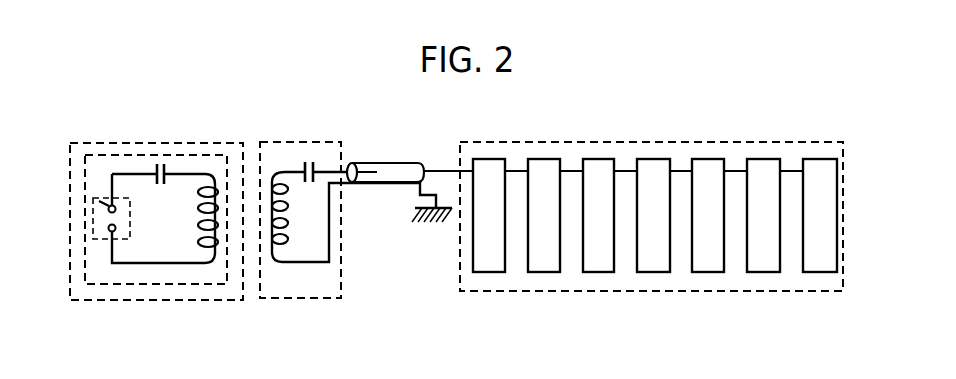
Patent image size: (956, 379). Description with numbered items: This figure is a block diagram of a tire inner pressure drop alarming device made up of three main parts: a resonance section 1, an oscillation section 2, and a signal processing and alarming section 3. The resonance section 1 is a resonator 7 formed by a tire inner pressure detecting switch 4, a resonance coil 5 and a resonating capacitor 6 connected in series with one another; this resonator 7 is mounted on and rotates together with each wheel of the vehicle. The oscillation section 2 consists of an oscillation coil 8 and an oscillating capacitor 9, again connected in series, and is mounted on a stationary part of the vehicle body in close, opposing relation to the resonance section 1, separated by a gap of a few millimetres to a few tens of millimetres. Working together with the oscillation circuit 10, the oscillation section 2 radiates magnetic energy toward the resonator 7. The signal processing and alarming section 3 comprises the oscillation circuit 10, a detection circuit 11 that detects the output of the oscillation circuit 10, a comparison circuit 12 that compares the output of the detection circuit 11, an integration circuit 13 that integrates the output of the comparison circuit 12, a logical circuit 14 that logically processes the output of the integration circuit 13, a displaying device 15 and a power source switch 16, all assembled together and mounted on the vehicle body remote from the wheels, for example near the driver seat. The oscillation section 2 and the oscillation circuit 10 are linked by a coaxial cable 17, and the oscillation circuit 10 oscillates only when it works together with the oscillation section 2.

The resonance section 1 is at (168, 143).
The oscillation section 2 is at (299, 142).
The signal processing and alarming section 3 is at (672, 292).
The tire inner pressure detecting switch 4 is at (130, 239).
The resonance coil 5 is at (198, 229).
The resonating capacitor 6 is at (165, 185).
The resonator 7 is at (148, 285).
The oscillation coil 8 is at (288, 239).
The oscillating capacitor 9 is at (315, 182).
The oscillation circuit 10 is at (485, 159).
The detection circuit 11 is at (540, 159).
The comparison circuit 12 is at (592, 159).
The integration circuit 13 is at (651, 159).
The logical circuit 14 is at (707, 159).
The displaying device 15 is at (757, 159).
The power source switch 16 is at (811, 159).
The coaxial cable 17 is at (388, 163).